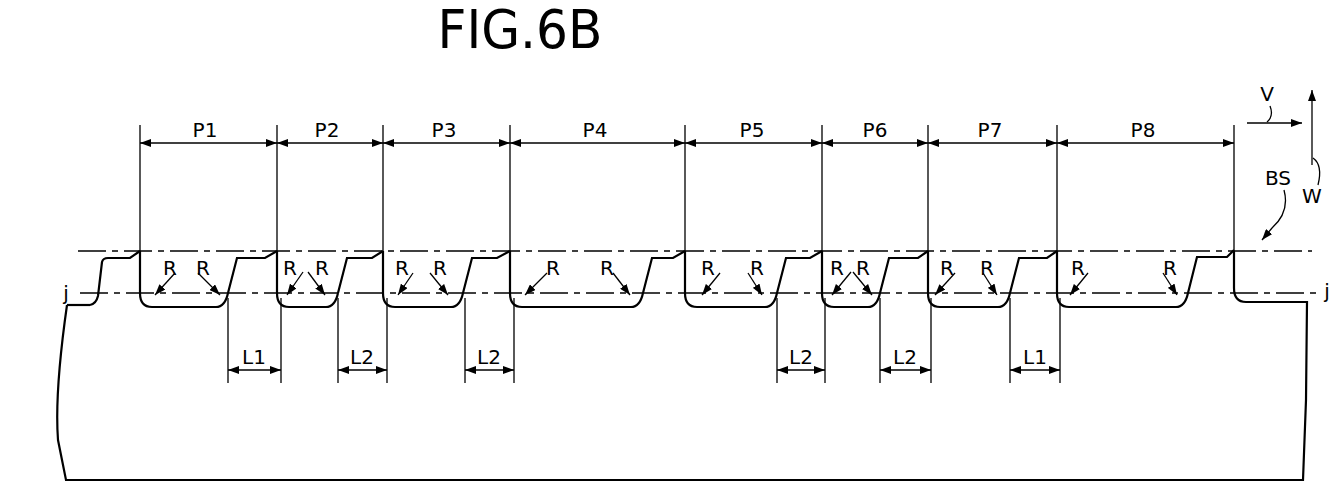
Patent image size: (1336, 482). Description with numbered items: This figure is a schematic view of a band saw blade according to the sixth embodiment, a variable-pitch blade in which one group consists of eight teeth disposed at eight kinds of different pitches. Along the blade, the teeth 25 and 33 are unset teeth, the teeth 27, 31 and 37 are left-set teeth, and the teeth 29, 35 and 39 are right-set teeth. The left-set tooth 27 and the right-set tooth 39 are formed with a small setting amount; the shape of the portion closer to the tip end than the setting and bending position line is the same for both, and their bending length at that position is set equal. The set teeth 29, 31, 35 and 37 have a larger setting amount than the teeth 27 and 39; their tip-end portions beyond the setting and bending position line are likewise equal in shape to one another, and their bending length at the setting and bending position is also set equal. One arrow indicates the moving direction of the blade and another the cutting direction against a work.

The unset tooth 25 is at (120, 274).
The left-set tooth 27 is at (1030, 266).
The right-set tooth 29 is at (905, 266).
The left-set tooth 31 is at (800, 267).
The unset tooth 33 is at (672, 267).
The right-set tooth 35 is at (495, 267).
The left-set tooth 37 is at (363, 267).
The right-set tooth 39 is at (250, 266).